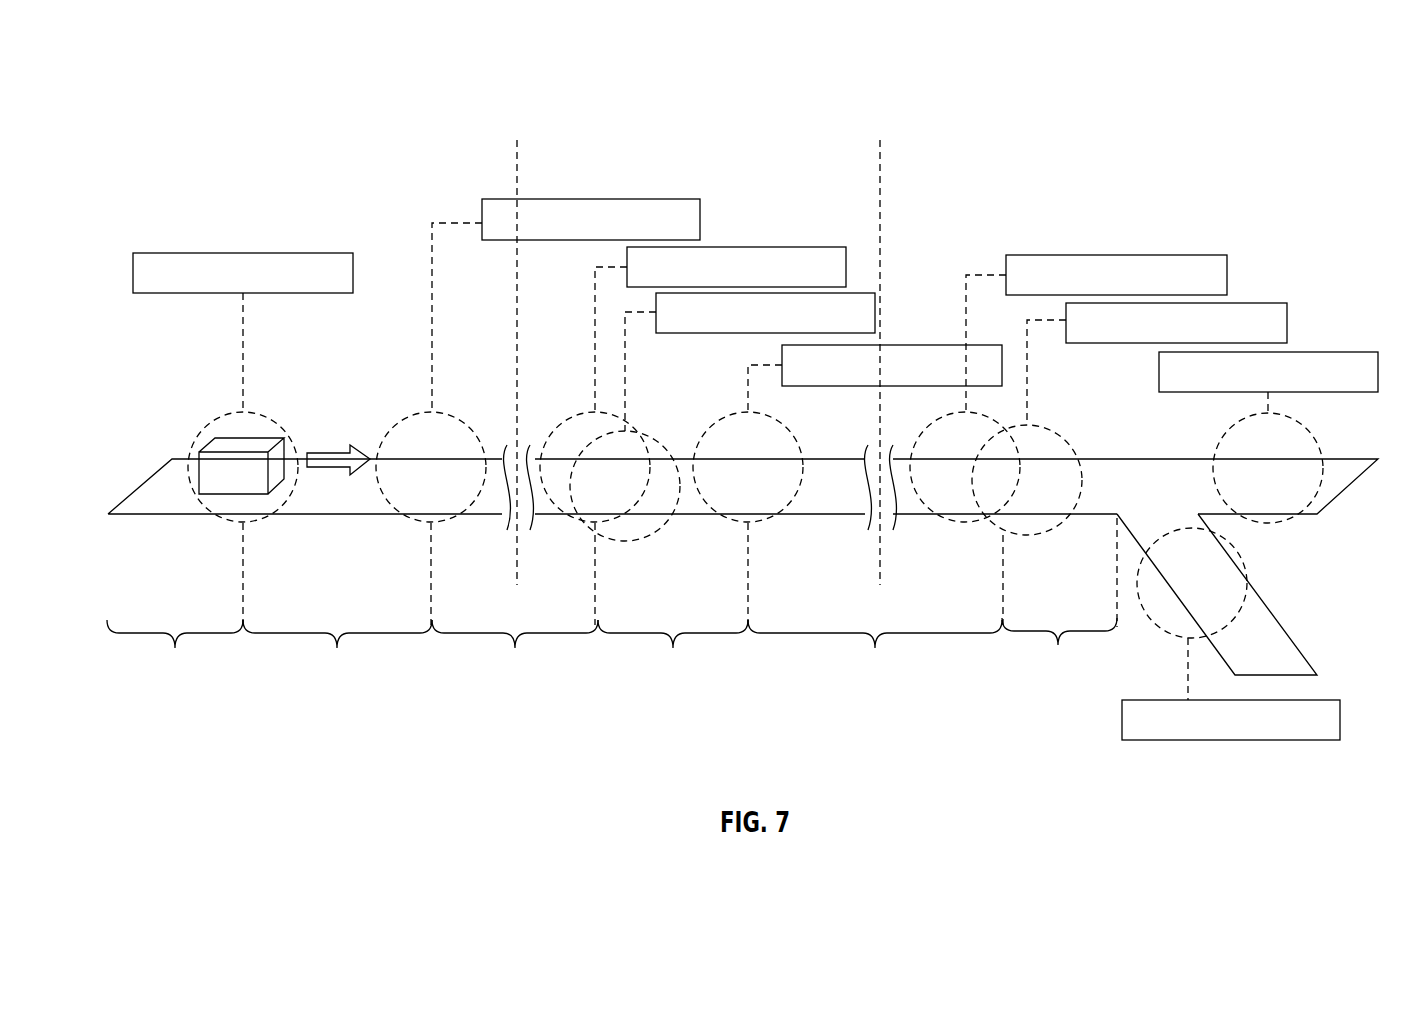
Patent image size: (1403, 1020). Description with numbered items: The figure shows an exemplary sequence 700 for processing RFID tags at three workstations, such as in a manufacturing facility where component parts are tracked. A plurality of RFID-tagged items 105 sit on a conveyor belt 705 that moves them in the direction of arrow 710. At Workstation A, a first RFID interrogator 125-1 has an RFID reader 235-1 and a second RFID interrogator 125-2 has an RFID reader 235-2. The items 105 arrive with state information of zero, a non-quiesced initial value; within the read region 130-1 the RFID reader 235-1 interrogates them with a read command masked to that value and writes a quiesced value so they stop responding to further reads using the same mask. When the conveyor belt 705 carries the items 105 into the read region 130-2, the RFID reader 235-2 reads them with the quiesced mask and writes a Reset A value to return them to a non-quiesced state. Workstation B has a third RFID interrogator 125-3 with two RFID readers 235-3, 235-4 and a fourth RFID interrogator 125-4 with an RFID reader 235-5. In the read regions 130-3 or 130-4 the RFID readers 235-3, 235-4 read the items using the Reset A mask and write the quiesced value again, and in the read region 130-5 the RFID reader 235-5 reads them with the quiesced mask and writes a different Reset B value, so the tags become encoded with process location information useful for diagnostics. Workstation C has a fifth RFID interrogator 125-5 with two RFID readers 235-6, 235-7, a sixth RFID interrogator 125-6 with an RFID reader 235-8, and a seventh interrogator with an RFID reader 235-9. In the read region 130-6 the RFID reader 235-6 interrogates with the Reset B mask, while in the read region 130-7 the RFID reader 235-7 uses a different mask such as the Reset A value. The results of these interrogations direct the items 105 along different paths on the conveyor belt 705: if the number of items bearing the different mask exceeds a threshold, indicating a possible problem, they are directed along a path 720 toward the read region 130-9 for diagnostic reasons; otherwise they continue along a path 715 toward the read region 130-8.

The sequence 700 is at (1315, 69).
The RFID-tagged items 105 is at (220, 483).
The conveyor belt 705 is at (330, 515).
The arrow 710 is at (330, 449).
The path 715 is at (1195, 470).
The path 720 is at (1152, 533).
The first RFID interrogator 125-1 is at (294, 234).
The second RFID interrogator 125-2 is at (559, 191).
The third RFID interrogator 125-3 is at (744, 223).
The fourth RFID interrogator 125-4 is at (909, 334).
The fifth RFID interrogator 125-5 is at (1132, 236).
The sixth RFID interrogator 125-6 is at (1318, 336).
The read region 130-1 is at (235, 412).
The read region 130-2 is at (405, 417).
The read region 130-3 is at (570, 418).
The read region 130-4 is at (652, 437).
The read region 130-5 is at (737, 412).
The read region 130-6 is at (928, 428).
The read region 130-7 is at (1042, 427).
The read region 130-8 is at (1307, 433).
The read region 130-9 is at (1247, 557).
The RFID reader 235-1 is at (243, 273).
The RFID reader 235-2 is at (591, 219).
The RFID reader 235-3 is at (736, 267).
The RFID reader 235-4 is at (765, 313).
The RFID reader 235-5 is at (892, 365).
The RFID reader 235-6 is at (1116, 275).
The RFID reader 235-7 is at (1176, 323).
The RFID reader 235-8 is at (1268, 372).
The RFID reader 235-9 is at (1231, 720).